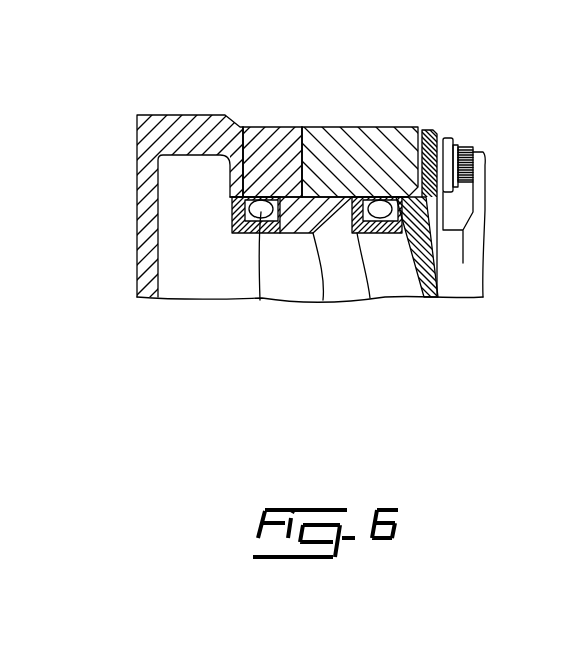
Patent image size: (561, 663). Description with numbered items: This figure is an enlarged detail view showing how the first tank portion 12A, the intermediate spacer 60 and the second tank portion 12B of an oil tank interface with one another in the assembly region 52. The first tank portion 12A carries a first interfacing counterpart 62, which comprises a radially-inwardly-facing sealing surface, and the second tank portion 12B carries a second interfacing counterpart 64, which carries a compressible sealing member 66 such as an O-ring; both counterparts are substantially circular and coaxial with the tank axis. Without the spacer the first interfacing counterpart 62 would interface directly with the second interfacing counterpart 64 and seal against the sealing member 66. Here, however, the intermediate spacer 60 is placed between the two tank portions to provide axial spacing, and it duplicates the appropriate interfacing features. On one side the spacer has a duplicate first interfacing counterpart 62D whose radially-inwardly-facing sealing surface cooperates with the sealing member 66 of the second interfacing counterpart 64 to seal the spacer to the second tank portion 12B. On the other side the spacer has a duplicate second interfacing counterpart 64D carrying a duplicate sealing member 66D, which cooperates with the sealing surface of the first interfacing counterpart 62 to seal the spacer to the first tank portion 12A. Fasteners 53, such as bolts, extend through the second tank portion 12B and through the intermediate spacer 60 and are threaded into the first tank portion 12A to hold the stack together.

The bearing assembly 52 is at (295, 100).
The duplicate second interfacing counterpart 64D is at (264, 193).
The intermediate spacer 60 is at (343, 143).
The second interfacing counterpart 64 is at (391, 181).
The fasteners 53 is at (472, 148).
The second tank portion 12B is at (432, 224).
The first tank portion 12A is at (147, 275).
The duplicate sealing member 66D is at (234, 233).
The first interfacing counterpart 62 is at (287, 204).
The sealing member 66 is at (380, 214).
The duplicate first interfacing counterpart 62D is at (463, 263).